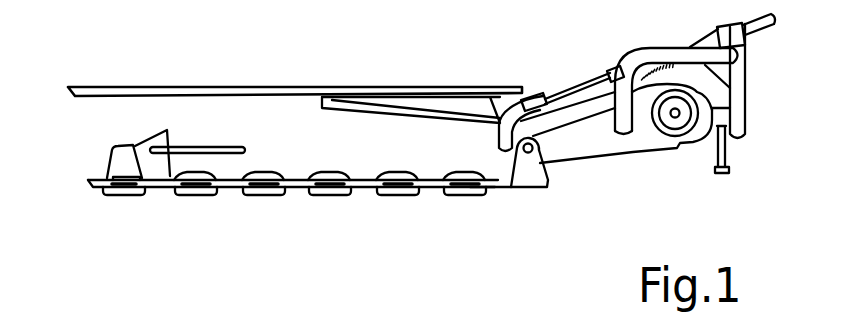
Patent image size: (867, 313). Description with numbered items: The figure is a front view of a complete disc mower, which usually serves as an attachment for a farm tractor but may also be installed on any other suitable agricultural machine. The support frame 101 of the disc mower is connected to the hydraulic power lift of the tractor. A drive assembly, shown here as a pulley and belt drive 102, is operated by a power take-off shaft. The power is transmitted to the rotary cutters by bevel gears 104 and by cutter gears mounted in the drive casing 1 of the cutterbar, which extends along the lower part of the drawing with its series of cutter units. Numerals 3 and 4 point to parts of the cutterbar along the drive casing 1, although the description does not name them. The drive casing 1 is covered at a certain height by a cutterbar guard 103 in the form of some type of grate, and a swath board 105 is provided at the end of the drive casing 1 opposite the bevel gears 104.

The drive casing 1 is at (293, 184).
The conveyor link plate 3 is at (285, 178).
The conveyor cap 4 is at (335, 172).
The support frame 101 is at (637, 122).
The pulley and belt drive 102 is at (637, 147).
The cutterbar guard 103 is at (292, 82).
The bevel gears 104 is at (545, 177).
The swath board 105 is at (90, 148).